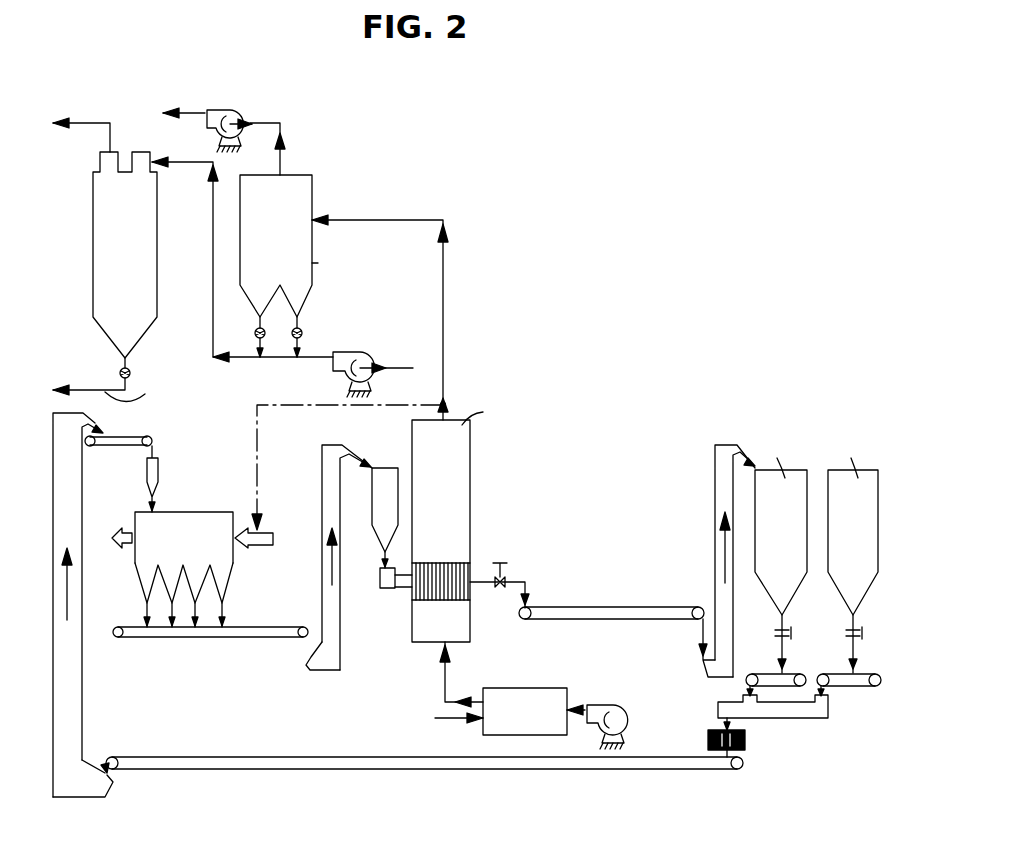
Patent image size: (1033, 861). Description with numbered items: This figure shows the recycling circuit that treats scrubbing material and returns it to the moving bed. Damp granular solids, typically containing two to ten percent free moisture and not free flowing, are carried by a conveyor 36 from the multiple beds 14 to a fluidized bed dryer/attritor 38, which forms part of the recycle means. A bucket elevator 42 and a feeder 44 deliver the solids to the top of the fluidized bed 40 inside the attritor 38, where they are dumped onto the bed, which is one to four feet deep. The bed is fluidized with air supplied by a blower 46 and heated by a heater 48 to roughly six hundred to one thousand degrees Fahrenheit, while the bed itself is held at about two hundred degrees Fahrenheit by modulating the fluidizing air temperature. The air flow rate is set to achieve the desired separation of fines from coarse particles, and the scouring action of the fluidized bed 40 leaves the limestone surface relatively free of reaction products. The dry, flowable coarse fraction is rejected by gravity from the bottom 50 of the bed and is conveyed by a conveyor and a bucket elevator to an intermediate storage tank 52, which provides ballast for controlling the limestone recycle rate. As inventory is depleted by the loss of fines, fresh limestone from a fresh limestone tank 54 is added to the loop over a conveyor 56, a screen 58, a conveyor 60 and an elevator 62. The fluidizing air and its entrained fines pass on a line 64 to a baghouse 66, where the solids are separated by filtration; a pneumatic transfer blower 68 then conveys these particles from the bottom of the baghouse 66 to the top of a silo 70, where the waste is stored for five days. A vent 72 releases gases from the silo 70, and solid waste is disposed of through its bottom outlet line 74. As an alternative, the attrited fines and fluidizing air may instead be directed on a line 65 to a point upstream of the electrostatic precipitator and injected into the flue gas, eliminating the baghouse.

The moving beds 14 is at (135, 518).
The conveyor 36 is at (287, 628).
The fluidized bed dryer/attritor 38 is at (470, 497).
The fluidized bed 40 is at (462, 580).
The bucket elevator 42 is at (322, 512).
The feeder 44 is at (390, 588).
The blower 46 is at (622, 715).
The heater 48 is at (513, 688).
The bottom of the bed 50 is at (505, 582).
The intermediate storage tank 52 is at (792, 528).
The fresh limestone tank 54 is at (862, 528).
The conveyor 56 is at (790, 708).
The screen 58 is at (745, 740).
The conveyor 60 is at (413, 770).
The elevator 62 is at (80, 717).
The line 64 is at (443, 285).
The line 65 is at (310, 405).
The baghouse 66 is at (305, 205).
The pneumatic transfer blower 68 is at (343, 372).
The silo 70 is at (145, 288).
The vent 72 is at (82, 128).
The bottom outlet line 74 is at (90, 393).